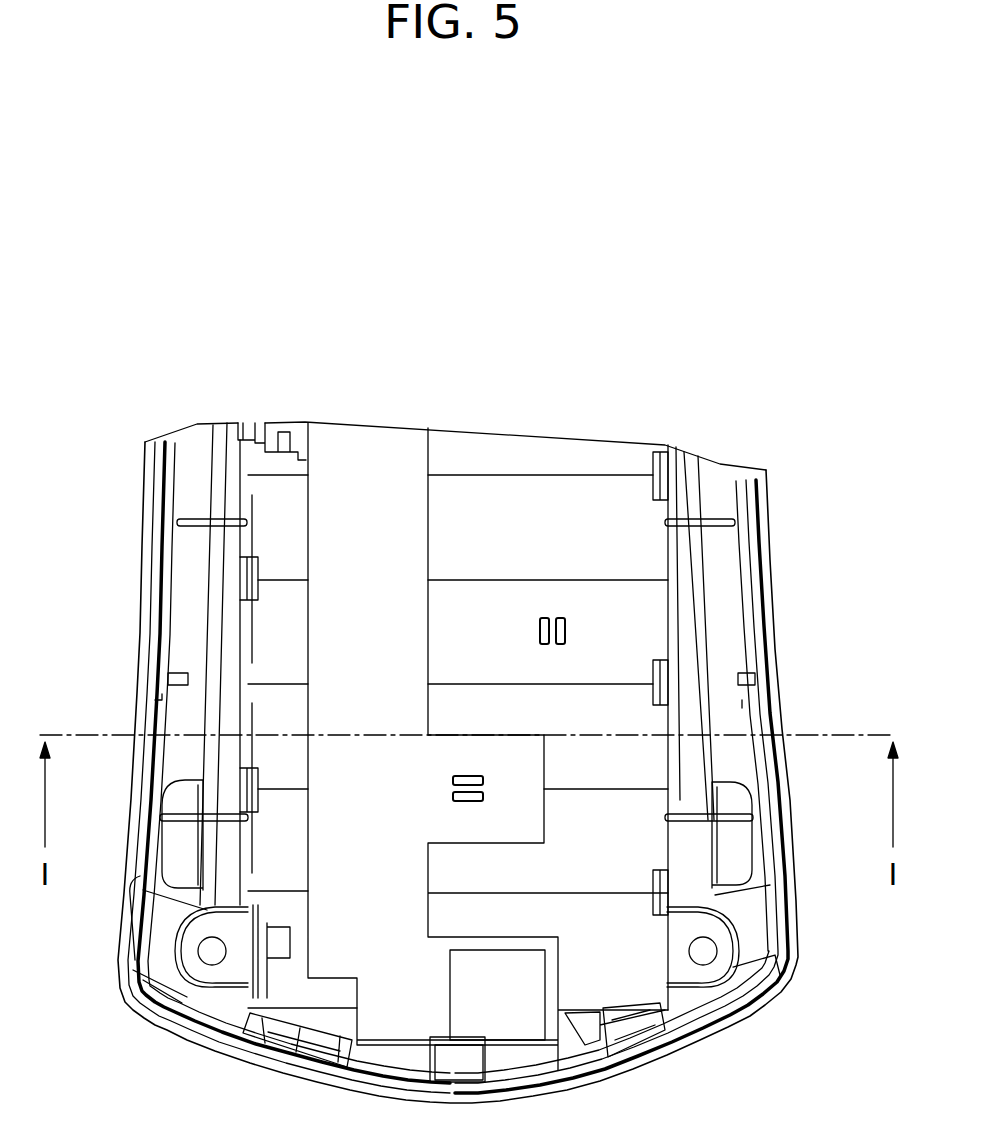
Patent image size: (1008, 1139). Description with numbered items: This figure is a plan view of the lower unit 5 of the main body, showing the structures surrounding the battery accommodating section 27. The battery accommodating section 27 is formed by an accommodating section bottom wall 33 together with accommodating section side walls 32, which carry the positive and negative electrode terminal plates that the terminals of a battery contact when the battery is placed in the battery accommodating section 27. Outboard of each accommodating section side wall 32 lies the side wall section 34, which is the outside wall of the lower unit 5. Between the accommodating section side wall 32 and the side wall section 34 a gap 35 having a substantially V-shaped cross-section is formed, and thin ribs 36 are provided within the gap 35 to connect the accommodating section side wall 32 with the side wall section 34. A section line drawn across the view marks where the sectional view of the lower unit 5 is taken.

The lower unit 5 is at (703, 438).
The battery accommodating section 27 is at (627, 957).
The accommodating section side wall 32 is at (240, 600).
The accommodating section bottom wall 33 is at (530, 512).
The side wall section 34 is at (168, 668).
The gap 35 is at (185, 638).
The thin ribs 36 is at (175, 808).